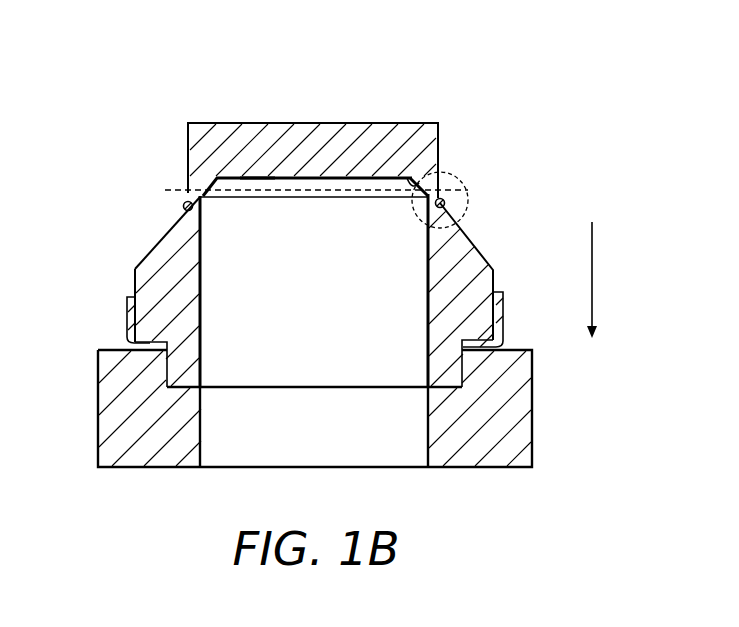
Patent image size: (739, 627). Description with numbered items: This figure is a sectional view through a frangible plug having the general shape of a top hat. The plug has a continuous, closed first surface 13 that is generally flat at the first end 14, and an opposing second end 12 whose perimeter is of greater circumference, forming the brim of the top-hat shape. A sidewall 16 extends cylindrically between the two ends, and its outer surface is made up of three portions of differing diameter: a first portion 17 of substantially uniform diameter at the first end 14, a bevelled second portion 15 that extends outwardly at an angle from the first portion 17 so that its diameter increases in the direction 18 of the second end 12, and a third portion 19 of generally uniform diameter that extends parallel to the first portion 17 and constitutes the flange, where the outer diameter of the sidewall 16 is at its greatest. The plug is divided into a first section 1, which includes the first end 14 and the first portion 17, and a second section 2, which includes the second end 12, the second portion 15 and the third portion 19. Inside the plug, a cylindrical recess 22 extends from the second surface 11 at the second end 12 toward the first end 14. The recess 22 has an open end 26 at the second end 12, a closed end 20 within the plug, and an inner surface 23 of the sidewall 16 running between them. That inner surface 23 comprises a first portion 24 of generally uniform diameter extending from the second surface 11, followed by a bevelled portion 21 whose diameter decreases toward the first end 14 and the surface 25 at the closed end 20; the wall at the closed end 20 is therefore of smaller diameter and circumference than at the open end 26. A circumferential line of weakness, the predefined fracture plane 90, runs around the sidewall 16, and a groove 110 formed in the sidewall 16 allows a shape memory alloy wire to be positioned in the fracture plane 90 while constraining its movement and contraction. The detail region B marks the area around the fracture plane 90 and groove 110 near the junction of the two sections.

The first section 1 is at (80, 123).
The second section 2 is at (80, 215).
The second surface 11 is at (122, 455).
The second end 12 is at (504, 316).
The first surface 13 is at (418, 122).
The first end 14 is at (438, 128).
The second portion of the sidewall 15 is at (162, 237).
The sidewall 16 is at (140, 268).
The first portion of the sidewall 17 is at (188, 130).
The direction 18 is at (592, 232).
The third portion of the sidewall 19 is at (494, 272).
The closed end 20 is at (312, 178).
The bevelled second portion of the inner surface 21 is at (440, 178).
The recess 22 is at (270, 375).
The inner surface 23 is at (428, 297).
The first portion of the inner surface 24 is at (200, 297).
The surface at the closed end 25 is at (259, 182).
The open end 26 is at (360, 375).
The predefined fracture plane 90 is at (165, 190).
The groove 110 is at (450, 204).
The detail region B is at (413, 210).